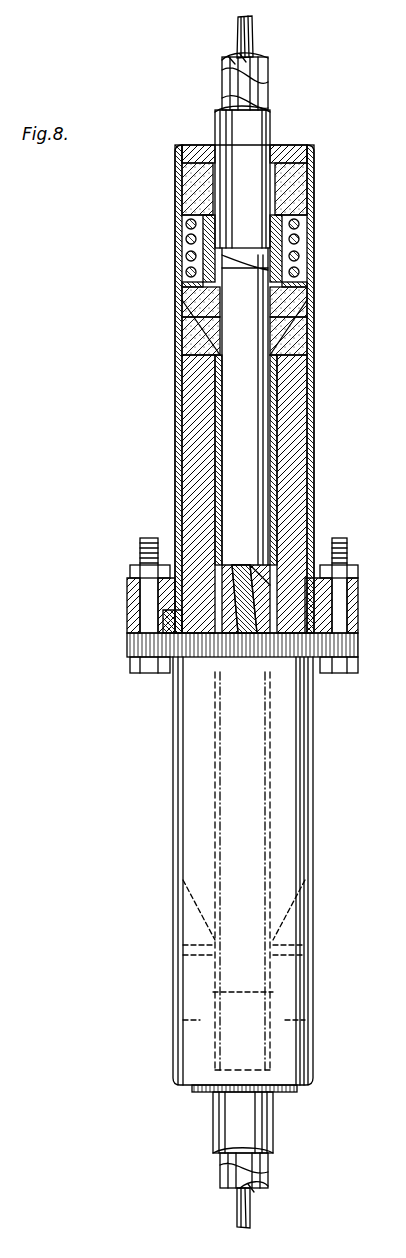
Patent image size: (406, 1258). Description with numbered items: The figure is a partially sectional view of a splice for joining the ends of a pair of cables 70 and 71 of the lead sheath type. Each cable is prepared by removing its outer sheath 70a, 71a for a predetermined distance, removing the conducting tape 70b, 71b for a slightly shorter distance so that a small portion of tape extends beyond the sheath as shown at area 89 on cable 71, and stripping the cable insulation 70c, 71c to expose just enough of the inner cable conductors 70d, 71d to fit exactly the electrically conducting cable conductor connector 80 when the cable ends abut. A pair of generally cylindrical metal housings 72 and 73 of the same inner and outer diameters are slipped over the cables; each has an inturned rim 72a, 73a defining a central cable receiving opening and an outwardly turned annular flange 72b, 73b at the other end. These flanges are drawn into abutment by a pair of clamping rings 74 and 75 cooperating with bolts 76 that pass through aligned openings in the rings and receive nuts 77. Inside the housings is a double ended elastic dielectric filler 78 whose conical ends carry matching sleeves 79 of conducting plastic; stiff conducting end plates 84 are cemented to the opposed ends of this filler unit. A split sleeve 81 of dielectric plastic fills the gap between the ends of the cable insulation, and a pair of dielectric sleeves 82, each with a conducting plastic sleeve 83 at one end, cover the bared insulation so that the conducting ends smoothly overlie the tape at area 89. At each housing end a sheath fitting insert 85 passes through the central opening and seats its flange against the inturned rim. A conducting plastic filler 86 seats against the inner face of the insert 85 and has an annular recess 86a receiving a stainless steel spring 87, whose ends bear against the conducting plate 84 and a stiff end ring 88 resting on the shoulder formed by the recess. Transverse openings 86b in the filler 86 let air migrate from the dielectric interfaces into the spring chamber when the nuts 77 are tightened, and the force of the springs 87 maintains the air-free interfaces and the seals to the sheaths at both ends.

The cable 70 is at (204, 1122).
The outer sheath 70a is at (262, 1135).
The conducting tape 70b is at (228, 1175).
The cable insulation 70c is at (258, 1190).
The inner cable conductor 70d is at (238, 1212).
The cable 71 is at (281, 131).
The outer sheath 71a is at (215, 113).
The conducting tape 71b is at (248, 78).
The cable insulation 71c is at (236, 60).
The inner cable conductor 71d is at (254, 32).
The metal housing 72 is at (190, 802).
The inturned rim 72a is at (300, 1090).
The annular flange 72b is at (177, 622).
The metal housing 73 is at (177, 480).
The inturned rim 73a is at (190, 147).
The annular flange 73b is at (350, 602).
The clamping ring 74 is at (140, 640).
The clamping ring 75 is at (130, 598).
The bolt 76 is at (338, 670).
The nut 77 is at (358, 572).
The double ended filler 78 is at (196, 416).
The sleeve 79 is at (300, 322).
The cable conductor connector 80 is at (230, 572).
The split sleeve 81 is at (270, 568).
The dielectric sleeve 82 is at (276, 444).
The conducting plastic sleeve 83 is at (245, 406).
The conducting end plate 84 is at (300, 296).
The sheath fitting insert 85 is at (290, 150).
The conducting plastic filler 86 is at (296, 183).
The annular recess 86a is at (205, 244).
The transverse opening 86b is at (300, 242).
The spring 87 is at (186, 226).
The end ring 88 is at (196, 208).
The area of extending conducting tape 89 is at (265, 270).